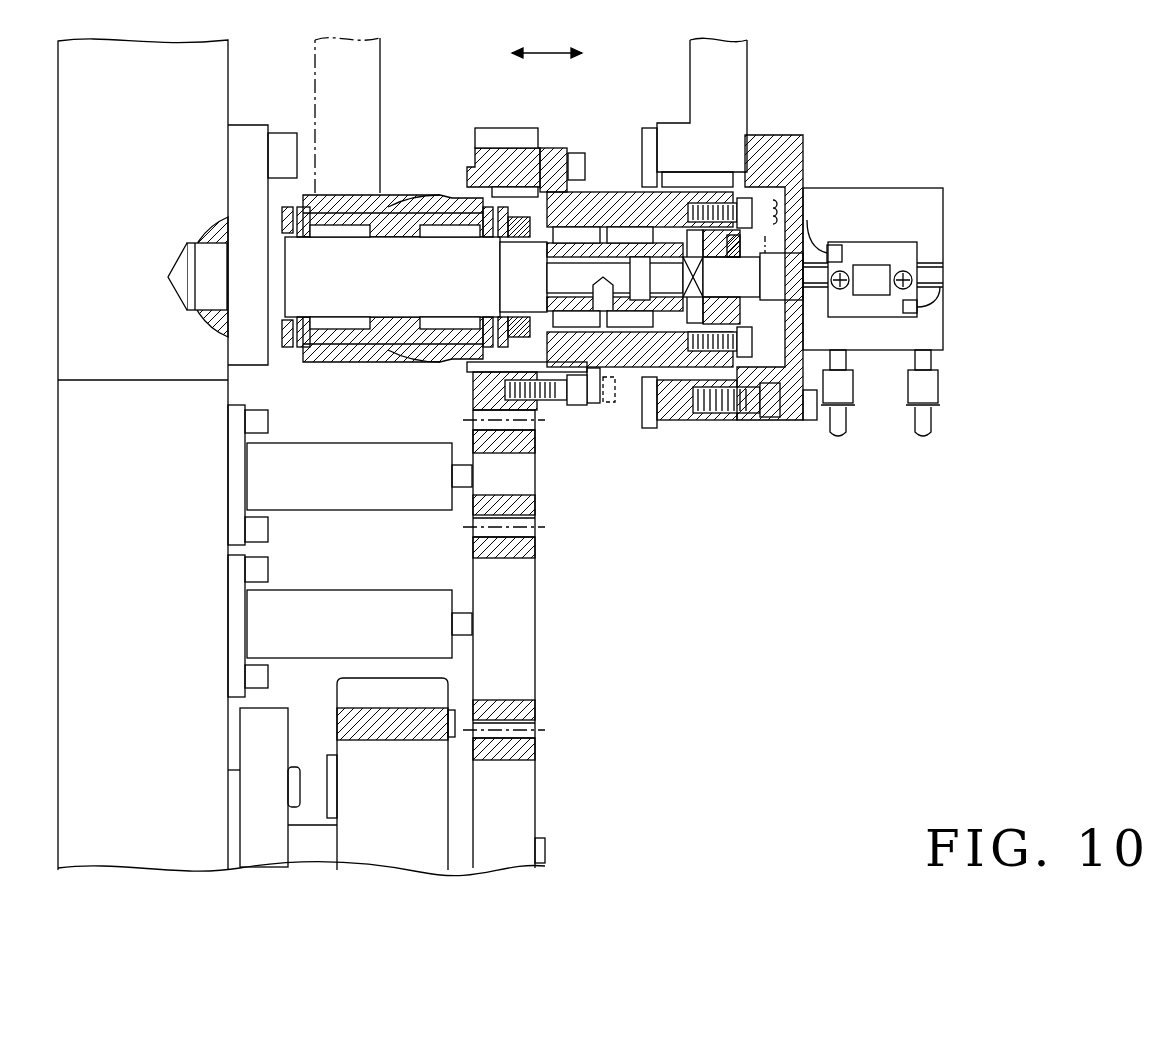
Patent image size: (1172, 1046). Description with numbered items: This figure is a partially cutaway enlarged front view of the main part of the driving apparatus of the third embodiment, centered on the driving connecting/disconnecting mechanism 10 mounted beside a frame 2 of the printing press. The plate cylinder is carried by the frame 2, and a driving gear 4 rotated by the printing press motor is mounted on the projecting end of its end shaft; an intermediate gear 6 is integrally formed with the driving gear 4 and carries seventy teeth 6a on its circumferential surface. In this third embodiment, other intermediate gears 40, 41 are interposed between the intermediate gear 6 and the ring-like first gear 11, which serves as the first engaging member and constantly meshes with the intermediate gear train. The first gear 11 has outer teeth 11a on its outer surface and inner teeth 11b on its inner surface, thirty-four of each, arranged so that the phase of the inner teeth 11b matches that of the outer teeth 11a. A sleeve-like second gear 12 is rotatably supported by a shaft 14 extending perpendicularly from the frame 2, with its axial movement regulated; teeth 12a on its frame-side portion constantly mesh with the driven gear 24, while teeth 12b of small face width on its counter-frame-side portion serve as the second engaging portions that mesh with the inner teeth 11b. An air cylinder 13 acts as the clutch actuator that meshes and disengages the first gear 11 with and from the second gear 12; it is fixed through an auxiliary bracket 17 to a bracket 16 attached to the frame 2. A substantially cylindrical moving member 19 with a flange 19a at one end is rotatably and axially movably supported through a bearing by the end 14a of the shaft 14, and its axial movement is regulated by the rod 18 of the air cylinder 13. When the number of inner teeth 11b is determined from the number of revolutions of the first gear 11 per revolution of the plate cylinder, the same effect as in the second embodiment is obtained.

The frame 2 is at (214, 68).
The driving gear 4 is at (448, 830).
The intermediate gear 6 is at (537, 826).
The teeth 6a is at (537, 427).
The driving connecting/disconnecting mechanism 10 is at (752, 495).
The first gear 11 is at (466, 138).
The outer teeth 11a is at (498, 140).
The inner teeth 11b is at (520, 190).
The second gear 12 is at (463, 192).
The teeth 12a is at (393, 205).
The teeth 12b is at (450, 198).
The air cylinder 13 is at (943, 325).
The shaft 14 is at (290, 273).
The end of shaft 14a is at (583, 303).
The bracket 16 is at (747, 68).
The auxiliary bracket 17 is at (795, 138).
The rod 18 is at (762, 300).
The moving member 19 is at (607, 192).
The flange 19a is at (553, 148).
The driven gear 24 is at (383, 62).
The intermediate gear 40 is at (537, 623).
The intermediate gear 41 is at (537, 480).